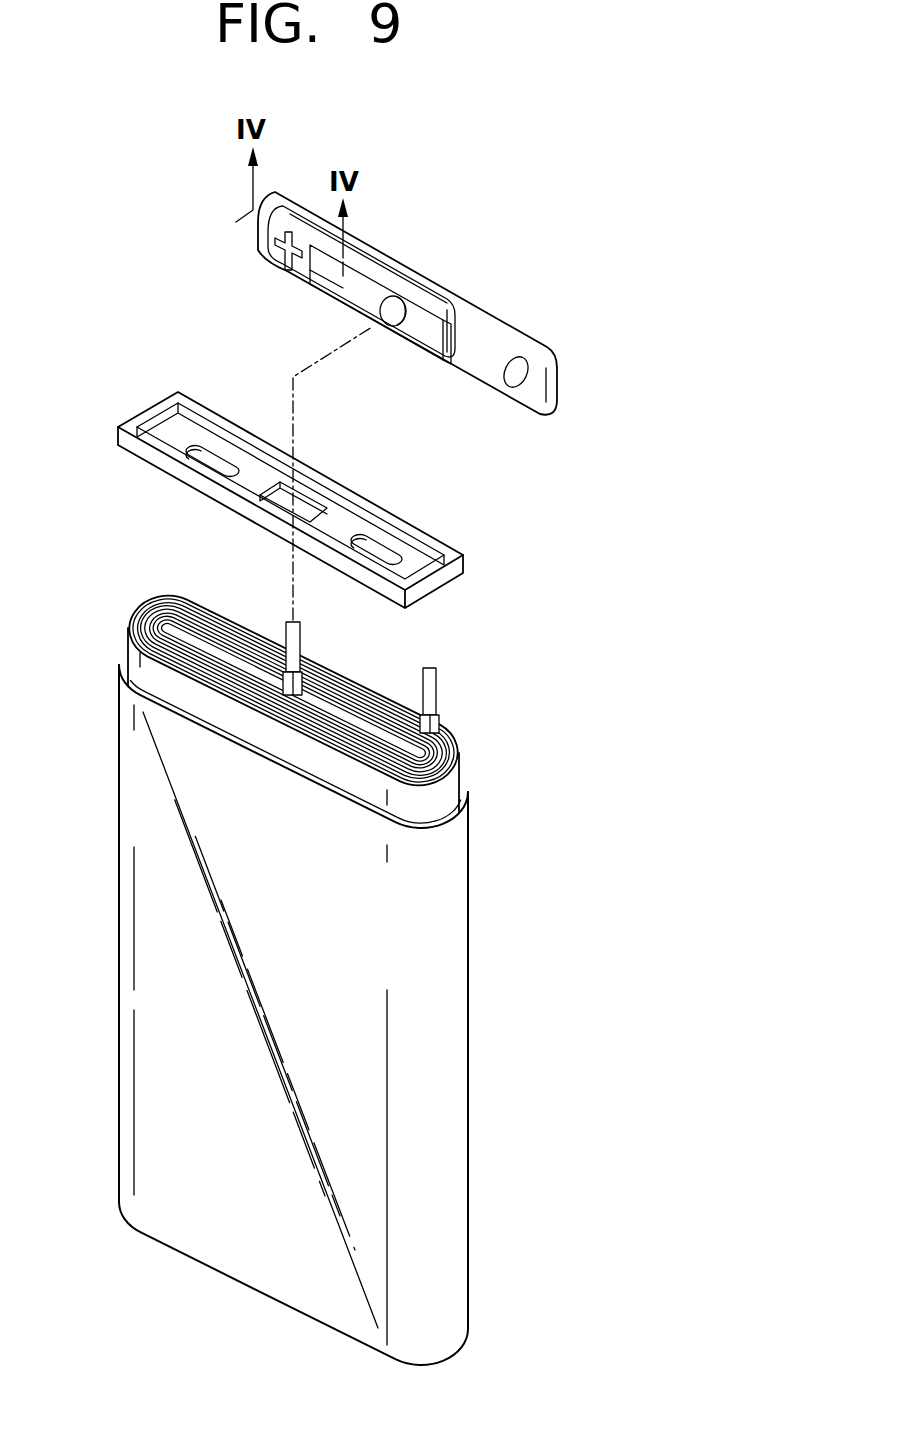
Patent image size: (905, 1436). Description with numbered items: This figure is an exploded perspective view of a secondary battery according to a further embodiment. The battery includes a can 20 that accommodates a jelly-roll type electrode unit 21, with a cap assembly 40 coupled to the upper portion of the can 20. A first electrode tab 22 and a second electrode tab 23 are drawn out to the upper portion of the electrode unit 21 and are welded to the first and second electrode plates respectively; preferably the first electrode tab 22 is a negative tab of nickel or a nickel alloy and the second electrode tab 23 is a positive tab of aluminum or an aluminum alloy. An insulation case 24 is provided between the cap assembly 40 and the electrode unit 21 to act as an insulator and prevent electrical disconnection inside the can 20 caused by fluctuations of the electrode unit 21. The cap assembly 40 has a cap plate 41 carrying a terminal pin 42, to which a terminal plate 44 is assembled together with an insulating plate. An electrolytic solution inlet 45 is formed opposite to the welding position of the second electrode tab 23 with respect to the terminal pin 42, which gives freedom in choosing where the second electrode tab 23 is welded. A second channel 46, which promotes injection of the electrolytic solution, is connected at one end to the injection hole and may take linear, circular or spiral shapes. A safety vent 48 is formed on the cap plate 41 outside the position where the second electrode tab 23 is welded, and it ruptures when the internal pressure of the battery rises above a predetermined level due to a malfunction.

The can 20 is at (454, 888).
The electrode unit 21 is at (163, 681).
The first electrode tab 22 is at (288, 620).
The second electrode tab 23 is at (426, 668).
The insulation case 24 is at (452, 552).
The cap assembly 40 is at (411, 284).
The cap plate 41 is at (513, 333).
The terminal pin 42 is at (387, 309).
The terminal plate 44 is at (340, 287).
The electrolytic solution inlet 45 is at (289, 212).
The second channel 46 is at (282, 243).
The safety vent 48 is at (507, 378).